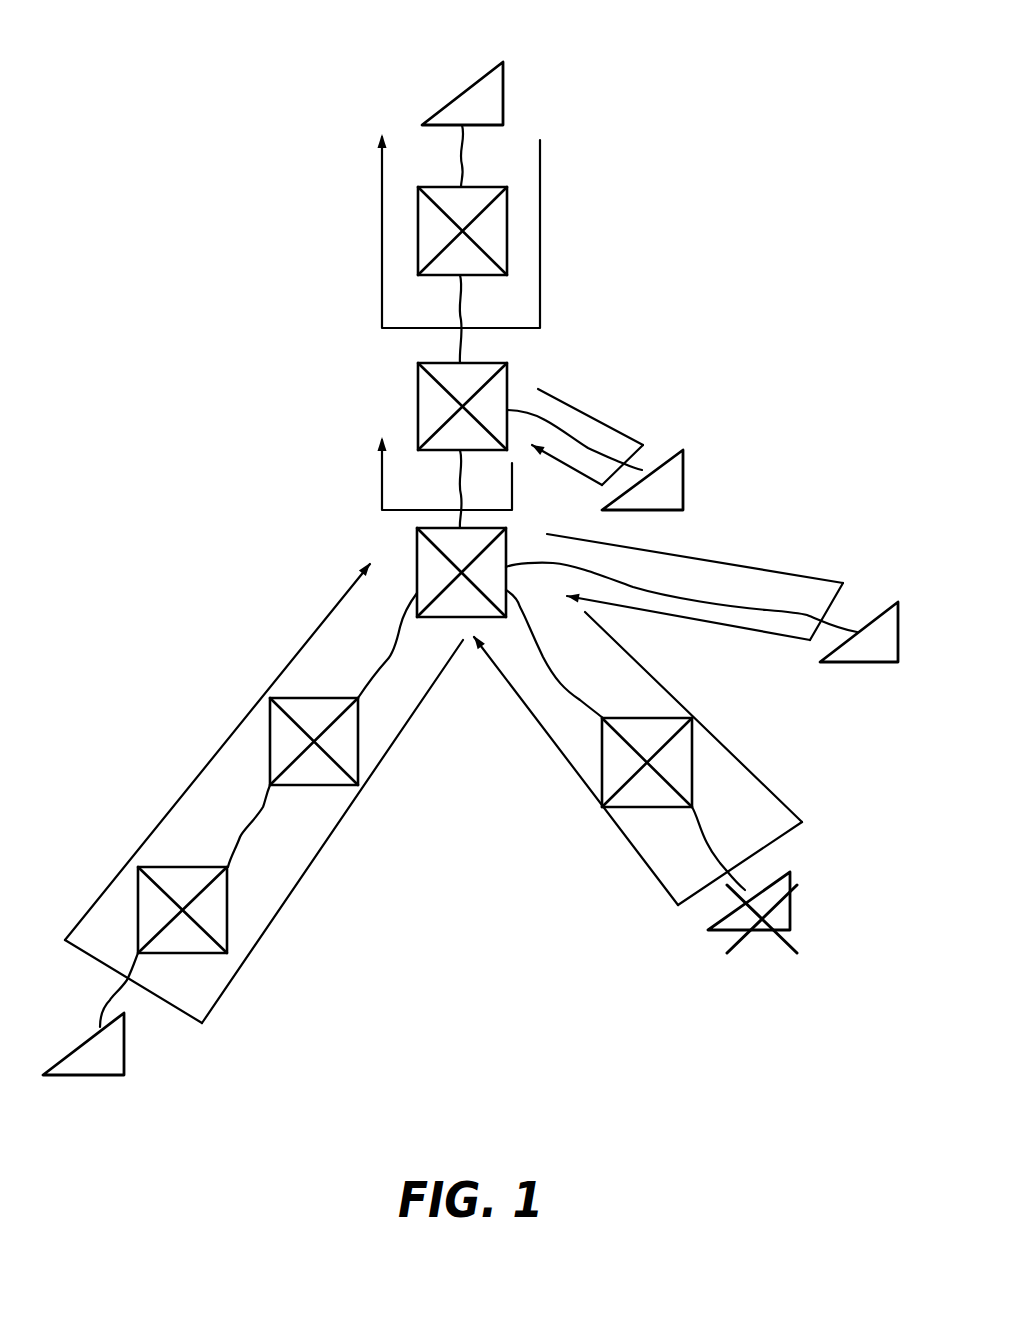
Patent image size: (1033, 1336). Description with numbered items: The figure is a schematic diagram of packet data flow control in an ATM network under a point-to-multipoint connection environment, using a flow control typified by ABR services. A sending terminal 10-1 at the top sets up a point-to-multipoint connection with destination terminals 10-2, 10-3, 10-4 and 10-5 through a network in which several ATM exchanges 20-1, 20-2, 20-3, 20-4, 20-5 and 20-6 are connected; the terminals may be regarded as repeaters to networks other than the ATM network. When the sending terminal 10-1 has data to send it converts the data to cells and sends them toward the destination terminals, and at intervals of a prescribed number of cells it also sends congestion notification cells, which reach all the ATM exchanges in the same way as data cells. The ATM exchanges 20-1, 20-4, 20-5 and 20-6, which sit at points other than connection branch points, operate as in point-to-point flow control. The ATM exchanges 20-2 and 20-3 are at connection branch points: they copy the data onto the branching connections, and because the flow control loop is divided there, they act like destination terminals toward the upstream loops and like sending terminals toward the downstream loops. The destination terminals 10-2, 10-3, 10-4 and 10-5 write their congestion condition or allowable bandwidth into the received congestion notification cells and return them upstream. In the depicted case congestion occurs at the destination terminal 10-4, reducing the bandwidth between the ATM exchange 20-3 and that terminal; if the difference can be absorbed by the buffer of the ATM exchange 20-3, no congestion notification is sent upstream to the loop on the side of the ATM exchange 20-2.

The sending terminal 10-1 is at (494, 88).
The destination terminal 10-2 is at (115, 1060).
The destination terminal 10-3 is at (685, 467).
The destination terminal 10-4 is at (728, 930).
The destination terminal 10-5 is at (862, 664).
The ATM exchange 20-1 is at (508, 237).
The ATM exchange 20-2 is at (508, 380).
The ATM exchange 20-3 is at (495, 528).
The ATM exchange 20-4 is at (360, 785).
The ATM exchange 20-5 is at (228, 938).
The ATM exchange 20-6 is at (606, 808).